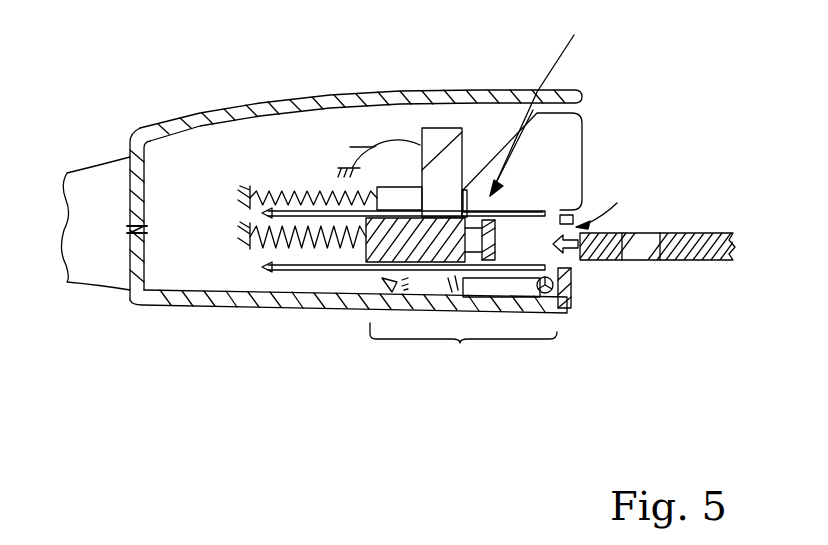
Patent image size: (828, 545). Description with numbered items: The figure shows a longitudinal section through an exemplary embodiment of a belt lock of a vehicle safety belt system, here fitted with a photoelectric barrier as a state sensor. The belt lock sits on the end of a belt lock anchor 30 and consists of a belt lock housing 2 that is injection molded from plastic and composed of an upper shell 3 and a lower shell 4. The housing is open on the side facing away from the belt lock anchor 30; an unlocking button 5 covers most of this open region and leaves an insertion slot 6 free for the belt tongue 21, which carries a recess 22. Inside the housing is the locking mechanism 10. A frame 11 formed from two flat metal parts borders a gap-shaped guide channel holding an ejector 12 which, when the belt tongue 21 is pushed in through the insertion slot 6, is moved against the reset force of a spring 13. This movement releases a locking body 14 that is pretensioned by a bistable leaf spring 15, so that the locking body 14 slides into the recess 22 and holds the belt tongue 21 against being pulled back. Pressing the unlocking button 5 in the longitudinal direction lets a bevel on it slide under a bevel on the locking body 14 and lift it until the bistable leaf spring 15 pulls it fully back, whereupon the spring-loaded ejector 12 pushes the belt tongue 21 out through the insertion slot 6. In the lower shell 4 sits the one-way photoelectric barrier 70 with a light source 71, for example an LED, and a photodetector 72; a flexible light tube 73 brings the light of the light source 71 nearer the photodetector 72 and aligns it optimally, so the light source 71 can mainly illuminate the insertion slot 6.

The belt lock housing 2 is at (130, 267).
The upper shell 3 is at (280, 103).
The lower shell 4 is at (192, 301).
The unlocking button 5 is at (583, 158).
The insertion slot 6 is at (591, 222).
The locking mechanism 10 is at (544, 102).
The frame 11 is at (320, 268).
The ejector 12 is at (385, 252).
The spring 13 is at (268, 188).
The locking body 14 is at (440, 127).
The bistable leaf spring 15 is at (371, 155).
The belt tongue 21 is at (690, 232).
The recess 22 is at (645, 256).
The belt lock anchor 30 is at (84, 187).
The photoelectric barrier 70 is at (460, 343).
The light source 71 is at (564, 316).
The photodetector 72 is at (390, 280).
The flexible light tube 73 is at (507, 287).